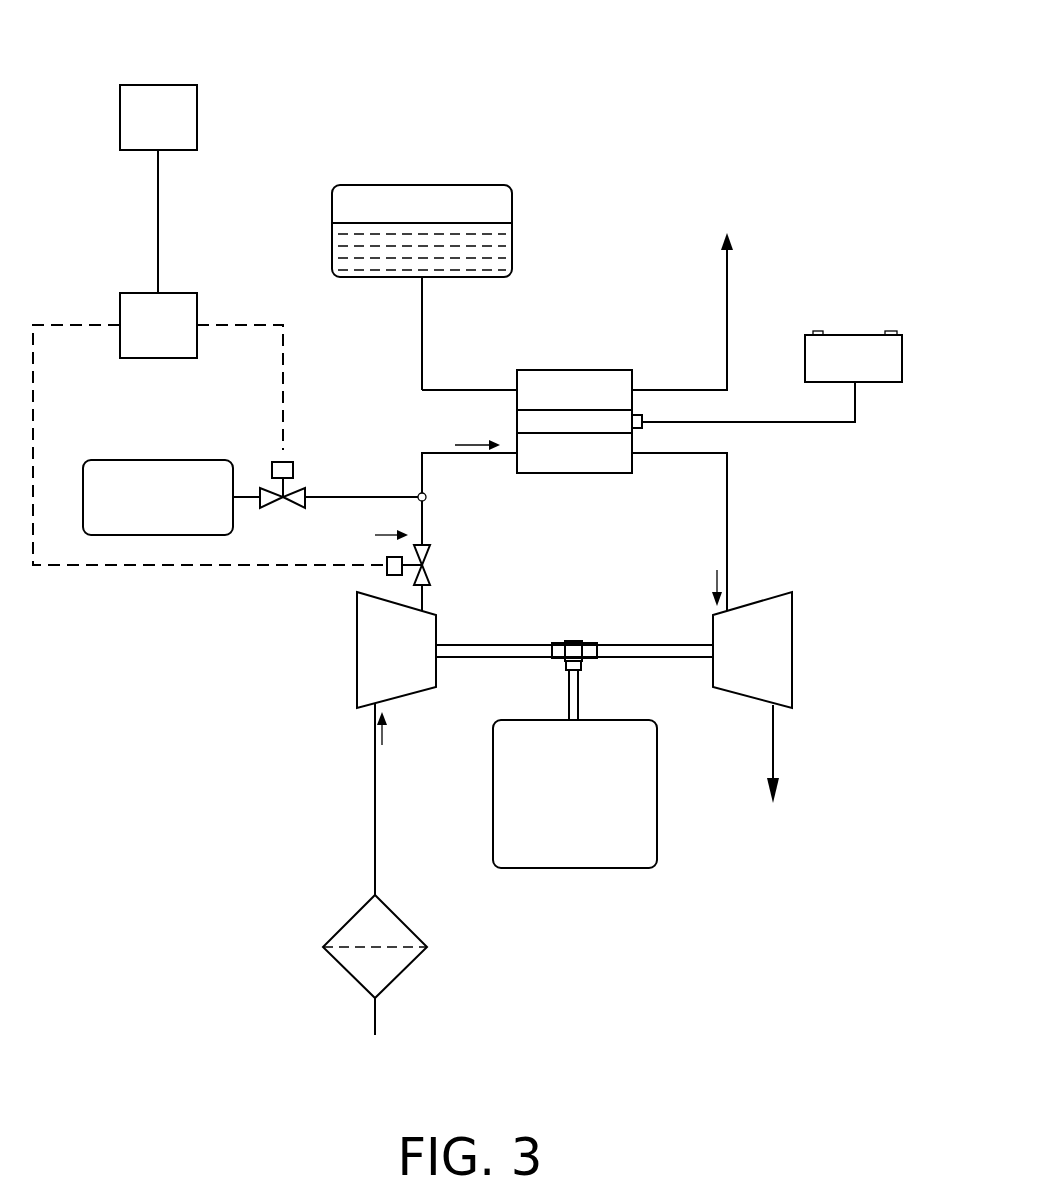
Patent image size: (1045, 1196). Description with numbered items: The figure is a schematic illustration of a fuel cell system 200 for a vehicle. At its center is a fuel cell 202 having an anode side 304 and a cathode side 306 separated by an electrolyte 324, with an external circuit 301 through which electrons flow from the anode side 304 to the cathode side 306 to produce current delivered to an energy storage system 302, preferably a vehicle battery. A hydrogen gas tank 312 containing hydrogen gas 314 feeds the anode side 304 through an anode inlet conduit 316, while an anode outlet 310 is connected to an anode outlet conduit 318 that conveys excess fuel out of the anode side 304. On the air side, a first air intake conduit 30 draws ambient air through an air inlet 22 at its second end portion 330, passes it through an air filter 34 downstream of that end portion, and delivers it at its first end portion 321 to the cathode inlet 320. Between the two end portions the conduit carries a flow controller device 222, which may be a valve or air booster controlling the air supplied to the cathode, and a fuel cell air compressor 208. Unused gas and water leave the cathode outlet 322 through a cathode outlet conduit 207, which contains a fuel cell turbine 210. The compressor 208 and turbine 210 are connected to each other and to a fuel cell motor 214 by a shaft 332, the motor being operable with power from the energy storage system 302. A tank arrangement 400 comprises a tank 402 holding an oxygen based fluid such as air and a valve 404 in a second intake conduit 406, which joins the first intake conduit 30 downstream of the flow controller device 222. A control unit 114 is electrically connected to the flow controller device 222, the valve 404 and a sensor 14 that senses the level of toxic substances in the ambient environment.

The sensor 14 is at (153, 85).
The control unit 114 is at (135, 293).
The tank arrangement 400 is at (268, 514).
The tank 402 is at (153, 460).
The valve 404 is at (301, 488).
The second intake conduit 406 is at (343, 498).
The first air intake conduit 30 is at (420, 472).
The flow controller device 222 is at (430, 558).
The fuel cell air compressor 208 is at (437, 630).
The shaft 332 is at (620, 645).
The fuel cell motor 214 is at (575, 868).
The fuel cell turbine 210 is at (763, 600).
The cathode outlet conduit 207 is at (727, 480).
The fuel cell 202 is at (565, 372).
The electrolyte 324 is at (517, 421).
The anode side 304 is at (600, 390).
The anode outlet 310 is at (634, 390).
The anode inlet conduit 316 is at (422, 332).
The anode outlet conduit 318 is at (510, 390).
The hydrogen gas tank 312 is at (370, 207).
The hydrogen gas 314 is at (370, 247).
The energy storage system 302 is at (858, 335).
The first end portion 321 is at (517, 455).
The cathode inlet 320 is at (514, 455).
The cathode side 306 is at (570, 452).
The external circuit 301 is at (638, 455).
The cathode outlet 322 is at (638, 455).
The air filter 34 is at (345, 975).
The air inlet 22 is at (375, 1035).
The second end portion 330 is at (375, 1035).
The fuel cell system 200 is at (630, 218).